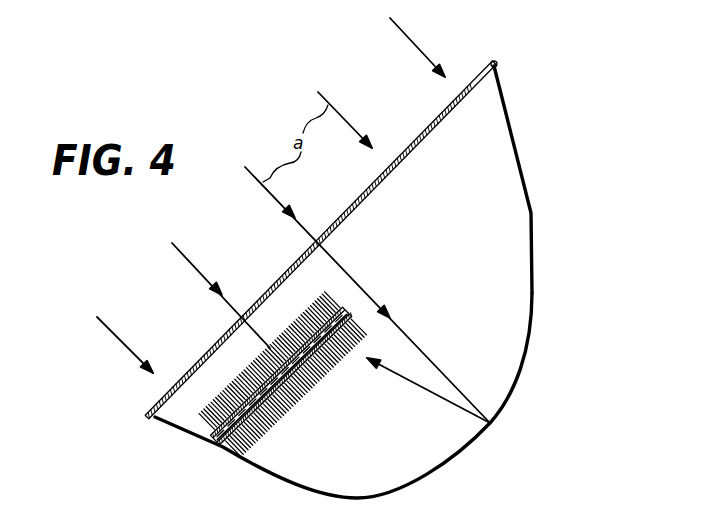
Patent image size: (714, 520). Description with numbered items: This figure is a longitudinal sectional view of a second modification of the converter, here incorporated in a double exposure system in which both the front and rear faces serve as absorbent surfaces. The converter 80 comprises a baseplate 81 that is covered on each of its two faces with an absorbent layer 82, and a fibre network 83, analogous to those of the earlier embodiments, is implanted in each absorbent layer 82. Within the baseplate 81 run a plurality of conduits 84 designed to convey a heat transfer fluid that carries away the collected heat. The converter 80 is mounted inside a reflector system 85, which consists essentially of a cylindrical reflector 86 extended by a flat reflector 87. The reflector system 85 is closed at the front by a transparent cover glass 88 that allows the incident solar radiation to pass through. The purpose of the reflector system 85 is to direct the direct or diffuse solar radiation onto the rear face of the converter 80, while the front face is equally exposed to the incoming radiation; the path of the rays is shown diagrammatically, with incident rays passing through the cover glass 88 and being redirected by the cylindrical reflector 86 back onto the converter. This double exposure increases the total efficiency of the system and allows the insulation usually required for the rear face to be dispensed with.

The converter 80 is at (304, 367).
The baseplate 81 is at (281, 376).
The absorbent layer 82 is at (281, 375).
The fibre network 83 is at (282, 374).
The conduits 84 is at (352, 315).
The reflector system 85 is at (393, 279).
The cylindrical reflector 86 is at (519, 380).
The flat reflector 87 is at (514, 147).
The transparent cover glass 88 is at (426, 133).